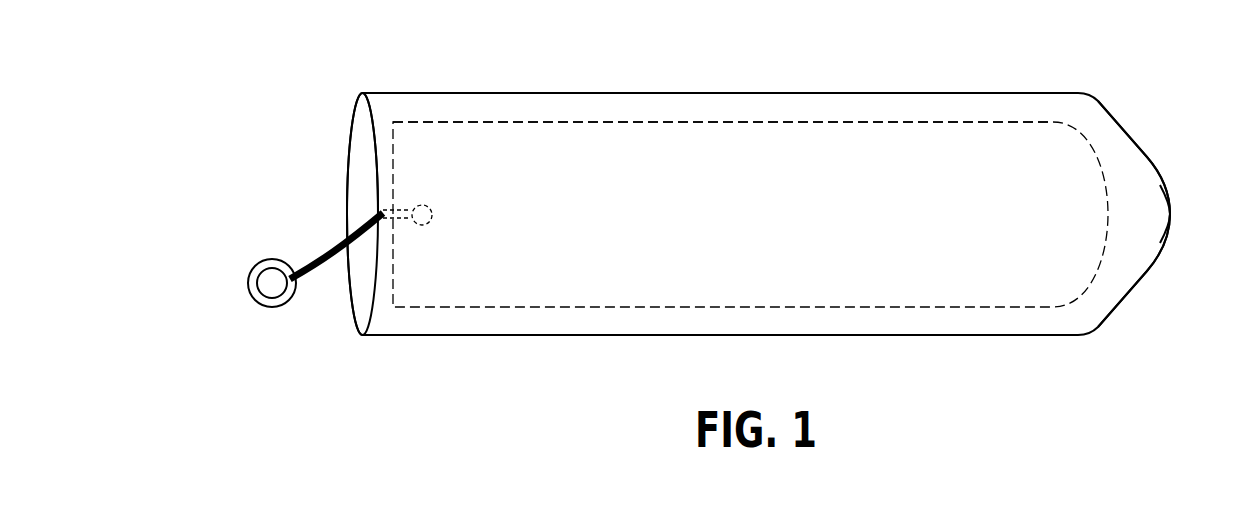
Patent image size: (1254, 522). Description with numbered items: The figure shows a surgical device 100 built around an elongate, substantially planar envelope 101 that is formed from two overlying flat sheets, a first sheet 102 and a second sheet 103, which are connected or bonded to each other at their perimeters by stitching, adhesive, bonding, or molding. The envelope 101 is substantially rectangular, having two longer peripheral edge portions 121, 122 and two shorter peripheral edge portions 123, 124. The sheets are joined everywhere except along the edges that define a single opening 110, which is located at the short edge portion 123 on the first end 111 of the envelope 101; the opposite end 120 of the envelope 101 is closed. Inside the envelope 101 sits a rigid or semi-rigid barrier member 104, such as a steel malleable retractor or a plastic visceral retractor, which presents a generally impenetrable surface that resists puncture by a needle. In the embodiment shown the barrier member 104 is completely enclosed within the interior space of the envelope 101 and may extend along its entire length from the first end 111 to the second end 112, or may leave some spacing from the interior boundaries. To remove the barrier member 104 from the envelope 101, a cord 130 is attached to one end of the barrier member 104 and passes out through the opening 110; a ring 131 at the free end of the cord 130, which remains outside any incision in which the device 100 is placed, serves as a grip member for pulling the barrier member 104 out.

The surgical device 100 is at (852, 44).
The envelope 101 is at (980, 93).
The first sheet 102 is at (481, 113).
The second sheet 103 is at (363, 128).
The barrier member 104 is at (648, 122).
The opening 110 is at (367, 165).
The first end 111 is at (350, 313).
The second end 112 is at (1170, 207).
The closed end 120 is at (1147, 155).
The longer peripheral edge portion 121 is at (766, 93).
The longer peripheral edge portion 122 is at (872, 335).
The shorter peripheral edge portion 123 is at (346, 193).
The shorter peripheral edge portion 124 is at (1155, 260).
The cord 130 is at (317, 253).
The ring 131 is at (253, 303).